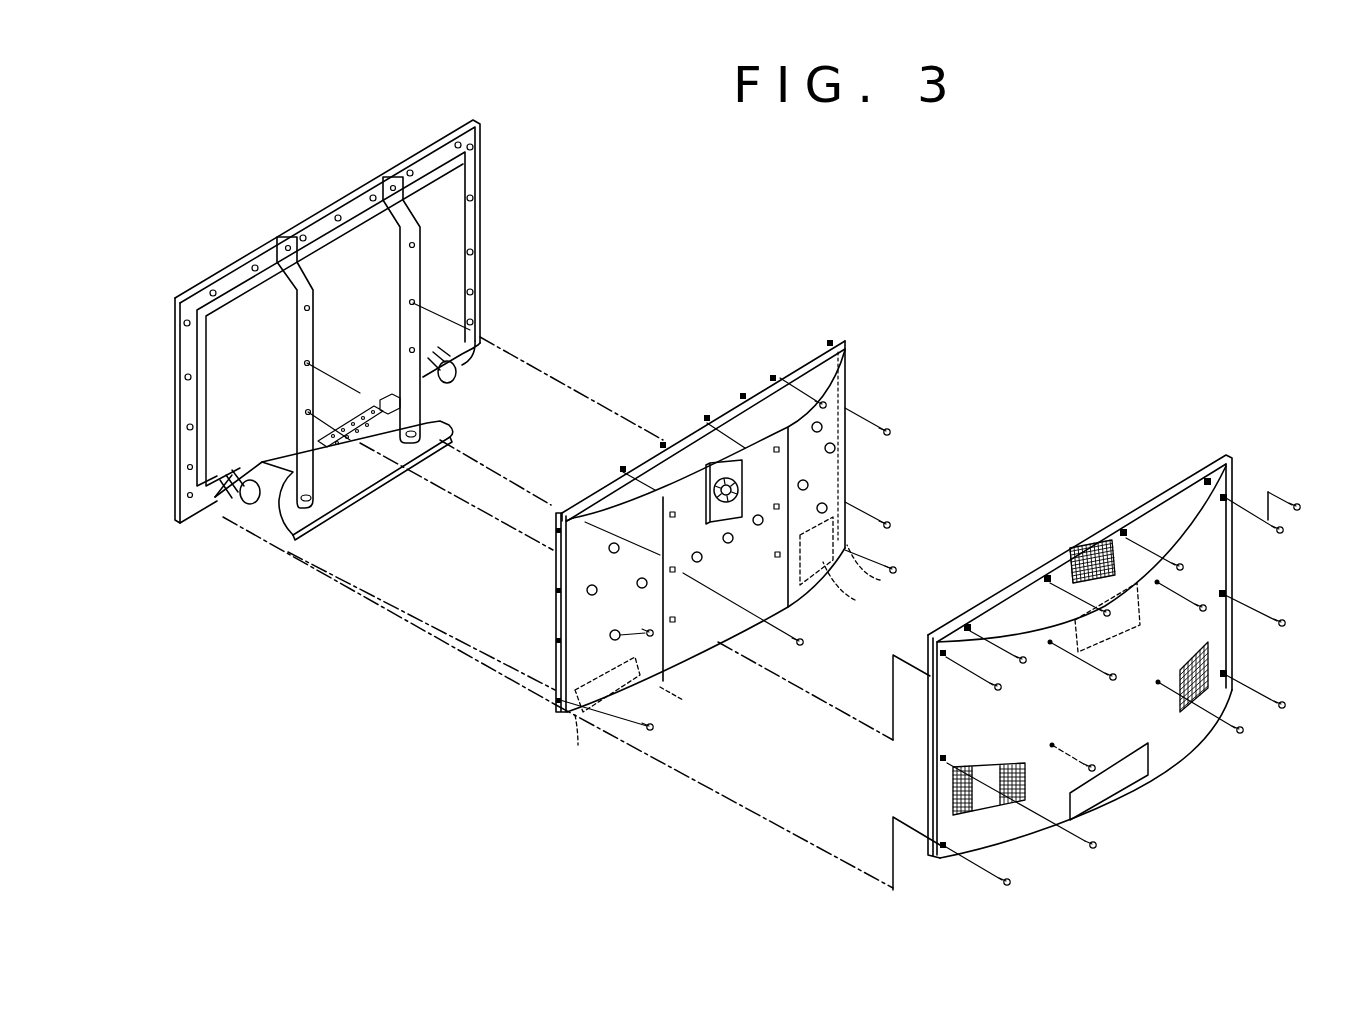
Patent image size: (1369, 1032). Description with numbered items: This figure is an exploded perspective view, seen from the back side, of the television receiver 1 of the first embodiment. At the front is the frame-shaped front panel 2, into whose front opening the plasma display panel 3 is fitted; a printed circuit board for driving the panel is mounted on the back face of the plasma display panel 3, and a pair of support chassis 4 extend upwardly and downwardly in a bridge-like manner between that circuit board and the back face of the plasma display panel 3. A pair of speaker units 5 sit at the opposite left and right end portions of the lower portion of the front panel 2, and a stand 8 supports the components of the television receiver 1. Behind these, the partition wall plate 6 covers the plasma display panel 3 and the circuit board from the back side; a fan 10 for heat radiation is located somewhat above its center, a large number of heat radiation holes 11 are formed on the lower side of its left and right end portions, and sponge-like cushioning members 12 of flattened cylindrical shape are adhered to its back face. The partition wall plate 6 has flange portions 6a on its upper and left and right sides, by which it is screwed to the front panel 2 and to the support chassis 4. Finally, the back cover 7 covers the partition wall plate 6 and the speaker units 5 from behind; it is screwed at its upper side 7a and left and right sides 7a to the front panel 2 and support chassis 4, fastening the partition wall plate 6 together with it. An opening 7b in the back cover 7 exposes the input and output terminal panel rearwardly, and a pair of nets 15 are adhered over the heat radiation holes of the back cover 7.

The television receiver 1 is at (883, 309).
The front panel 2 is at (347, 195).
The plasma display panel 3 is at (457, 222).
The support chassis 4 is at (413, 268).
The speaker unit 5 is at (455, 380).
The partition wall plate 6 is at (813, 373).
The flange portion 6a is at (722, 410).
The back cover 7 is at (1169, 503).
The upper side and opposite left and right sides of back cover 7a is at (1124, 522).
The opening 7b is at (1135, 780).
The stand 8 is at (350, 472).
The fan 10 is at (744, 464).
The heat radiation holes 11 is at (742, 643).
The cushioning member 12 is at (827, 508).
The net 15 is at (1212, 660).